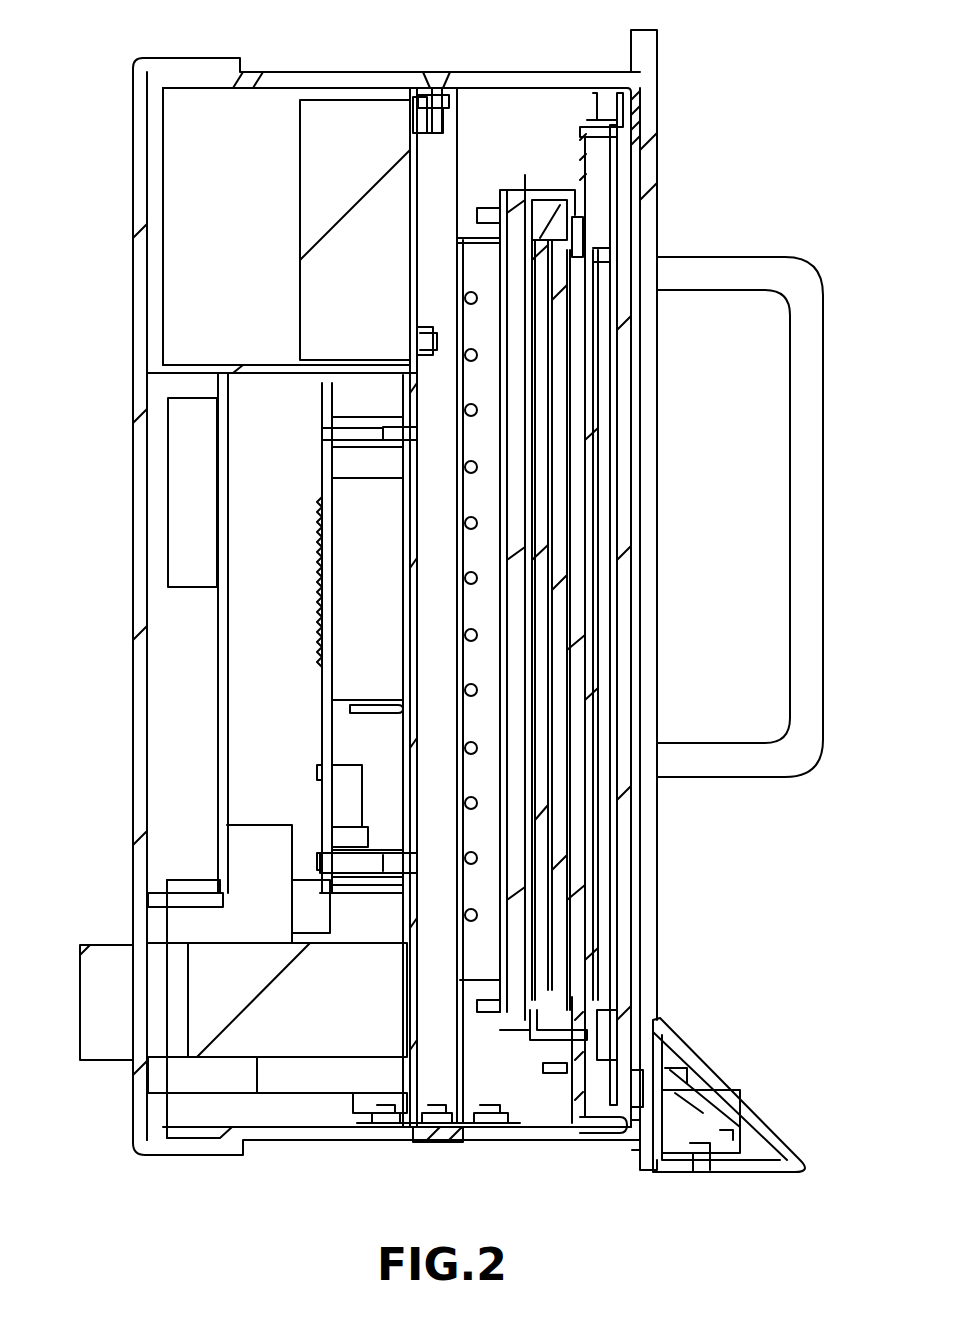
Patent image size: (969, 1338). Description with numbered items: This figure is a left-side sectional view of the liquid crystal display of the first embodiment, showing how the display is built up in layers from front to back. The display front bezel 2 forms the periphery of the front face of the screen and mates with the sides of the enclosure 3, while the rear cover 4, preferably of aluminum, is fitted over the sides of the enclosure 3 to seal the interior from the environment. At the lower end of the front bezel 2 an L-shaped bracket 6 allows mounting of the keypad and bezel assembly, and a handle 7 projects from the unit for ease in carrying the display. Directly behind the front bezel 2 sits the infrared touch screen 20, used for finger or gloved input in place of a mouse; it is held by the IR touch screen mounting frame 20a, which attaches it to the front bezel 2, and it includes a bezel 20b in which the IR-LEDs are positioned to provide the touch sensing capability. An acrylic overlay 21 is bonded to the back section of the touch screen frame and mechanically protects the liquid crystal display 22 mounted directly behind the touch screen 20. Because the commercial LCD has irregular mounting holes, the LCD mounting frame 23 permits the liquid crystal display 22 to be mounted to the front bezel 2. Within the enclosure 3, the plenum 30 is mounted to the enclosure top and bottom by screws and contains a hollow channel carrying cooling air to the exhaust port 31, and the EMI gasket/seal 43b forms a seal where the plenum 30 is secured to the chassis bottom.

The display front bezel 2 is at (647, 57).
The enclosure 3 is at (335, 80).
The rear cover 4 is at (143, 407).
The L-shaped bracket 6 is at (770, 1140).
The handle 7 is at (787, 282).
The infrared touch screen 20 is at (617, 235).
The IR touch screen mounting frame 20a is at (583, 127).
The bezel 20b is at (627, 523).
The acrylic overlay 21 is at (600, 437).
The liquid crystal display 22 is at (553, 1020).
The LCD mounting frame 23 is at (617, 127).
The plenum 30 is at (432, 140).
The exhaust port 31 is at (255, 125).
The EMI gasket/seal 43b is at (397, 1120).